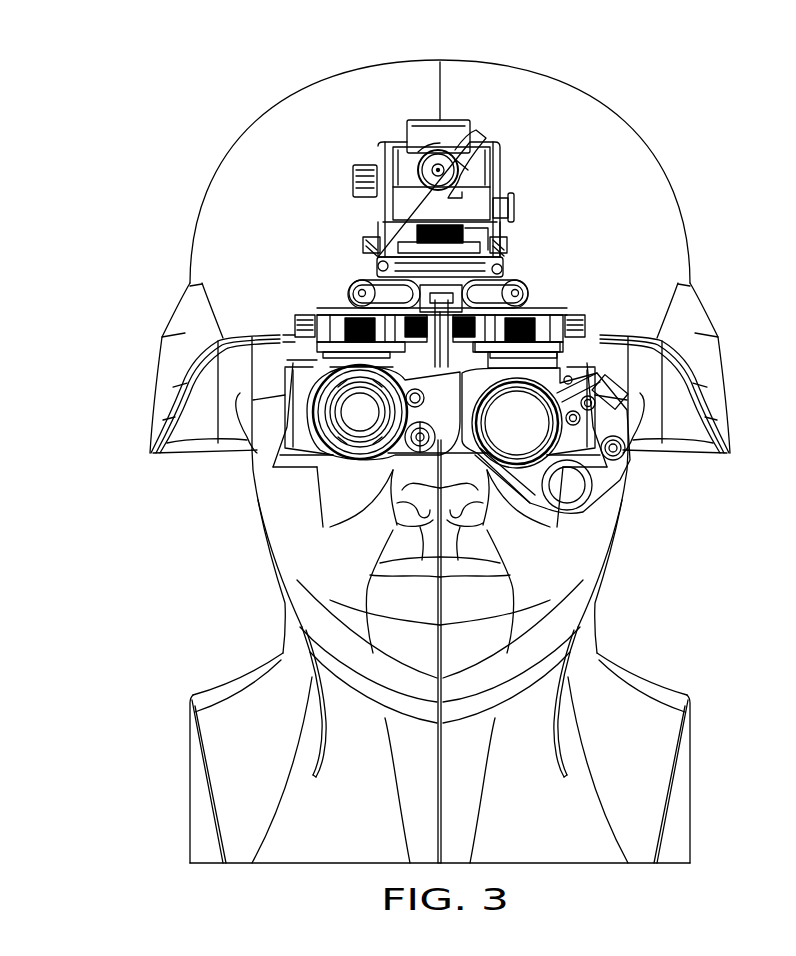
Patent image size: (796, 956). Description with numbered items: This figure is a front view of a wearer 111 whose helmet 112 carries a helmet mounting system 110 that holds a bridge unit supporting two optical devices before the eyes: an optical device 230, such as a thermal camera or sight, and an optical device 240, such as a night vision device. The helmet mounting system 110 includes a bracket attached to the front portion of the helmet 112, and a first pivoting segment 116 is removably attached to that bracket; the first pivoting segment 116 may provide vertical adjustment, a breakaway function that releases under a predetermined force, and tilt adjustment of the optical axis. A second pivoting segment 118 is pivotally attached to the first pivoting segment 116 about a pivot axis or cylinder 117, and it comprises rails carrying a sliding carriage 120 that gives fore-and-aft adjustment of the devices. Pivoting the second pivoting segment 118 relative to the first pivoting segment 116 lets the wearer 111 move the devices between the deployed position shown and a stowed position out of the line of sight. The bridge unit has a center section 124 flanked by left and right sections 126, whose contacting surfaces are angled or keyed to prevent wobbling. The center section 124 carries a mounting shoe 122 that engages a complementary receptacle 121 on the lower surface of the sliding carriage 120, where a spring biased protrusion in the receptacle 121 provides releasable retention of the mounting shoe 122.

The helmet mounting system 110 is at (433, 177).
The wearer 111 is at (643, 690).
The helmet 112 is at (585, 115).
The first pivoting segment 116 is at (357, 197).
The pivot axis or cylinder 117 is at (513, 197).
The second pivoting segment 118 is at (463, 240).
The sliding carriage 120 is at (370, 240).
The receptacle 121 is at (317, 346).
The mounting shoe 122 is at (455, 262).
The center section 124 is at (440, 276).
The left and right sections 126 is at (405, 292).
The optical device 230 is at (617, 482).
The optical device 240 is at (318, 445).